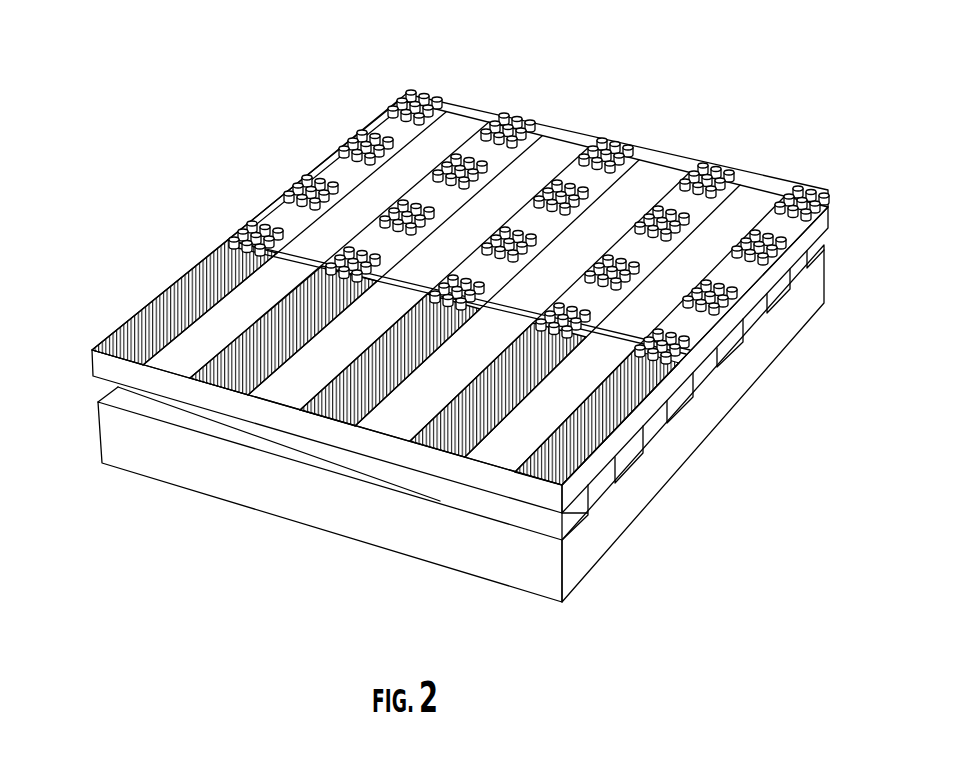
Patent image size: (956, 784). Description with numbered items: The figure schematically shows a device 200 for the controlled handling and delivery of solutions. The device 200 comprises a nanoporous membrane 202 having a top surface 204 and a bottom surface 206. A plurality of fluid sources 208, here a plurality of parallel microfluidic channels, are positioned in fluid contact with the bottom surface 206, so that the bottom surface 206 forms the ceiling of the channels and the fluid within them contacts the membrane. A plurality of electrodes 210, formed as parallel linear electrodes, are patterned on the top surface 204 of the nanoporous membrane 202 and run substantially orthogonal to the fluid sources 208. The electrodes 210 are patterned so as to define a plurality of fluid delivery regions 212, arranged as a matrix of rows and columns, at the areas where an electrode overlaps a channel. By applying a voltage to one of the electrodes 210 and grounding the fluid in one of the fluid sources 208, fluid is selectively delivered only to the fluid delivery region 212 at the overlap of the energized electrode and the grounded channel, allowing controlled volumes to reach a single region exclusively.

The device 200 is at (441, 338).
The nanoporous membrane 202 is at (102, 363).
The top surface 204 is at (483, 462).
The bottom surface 206 is at (445, 480).
The fluid sources 208 is at (725, 347).
The electrodes 210 is at (213, 371).
The fluid delivery regions 212 is at (707, 295).